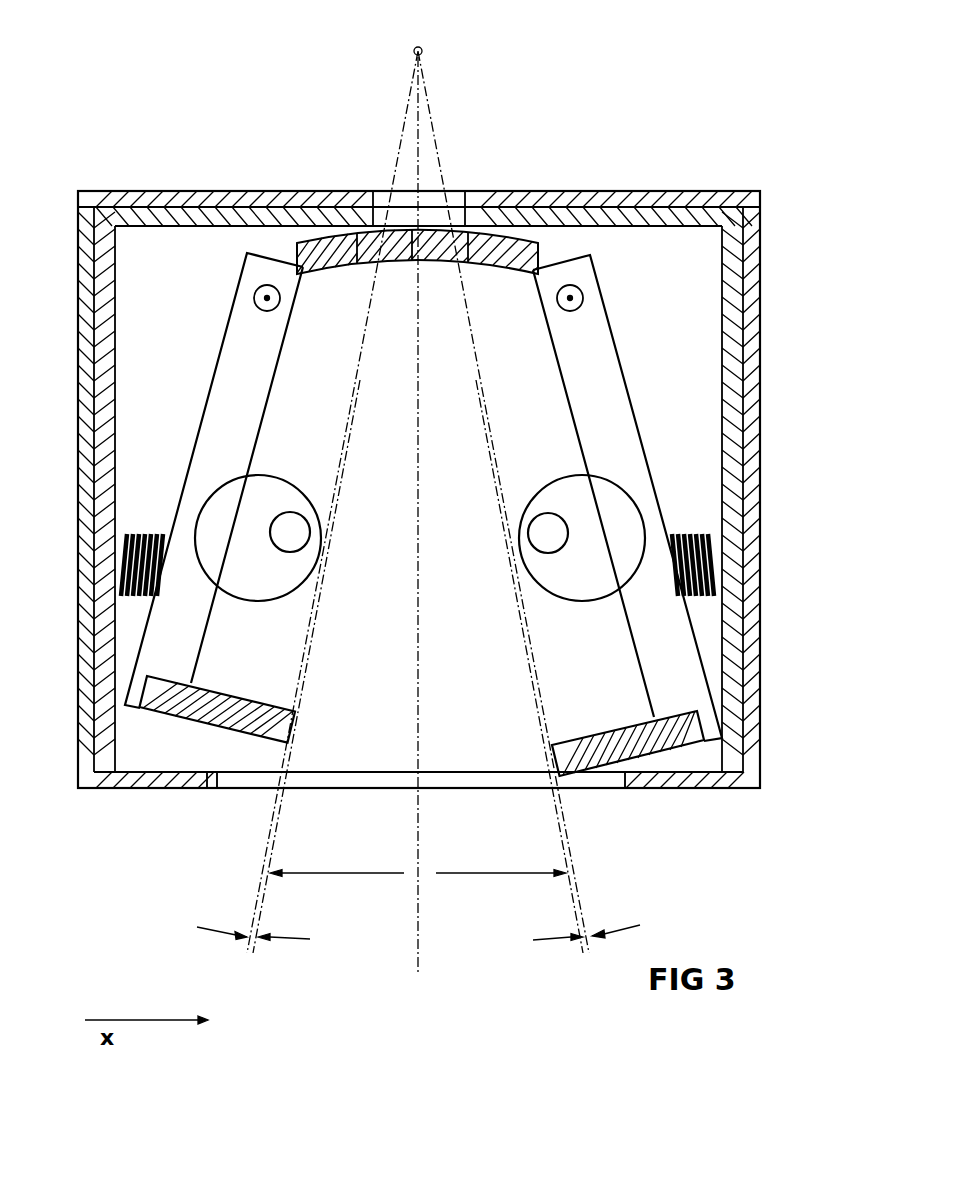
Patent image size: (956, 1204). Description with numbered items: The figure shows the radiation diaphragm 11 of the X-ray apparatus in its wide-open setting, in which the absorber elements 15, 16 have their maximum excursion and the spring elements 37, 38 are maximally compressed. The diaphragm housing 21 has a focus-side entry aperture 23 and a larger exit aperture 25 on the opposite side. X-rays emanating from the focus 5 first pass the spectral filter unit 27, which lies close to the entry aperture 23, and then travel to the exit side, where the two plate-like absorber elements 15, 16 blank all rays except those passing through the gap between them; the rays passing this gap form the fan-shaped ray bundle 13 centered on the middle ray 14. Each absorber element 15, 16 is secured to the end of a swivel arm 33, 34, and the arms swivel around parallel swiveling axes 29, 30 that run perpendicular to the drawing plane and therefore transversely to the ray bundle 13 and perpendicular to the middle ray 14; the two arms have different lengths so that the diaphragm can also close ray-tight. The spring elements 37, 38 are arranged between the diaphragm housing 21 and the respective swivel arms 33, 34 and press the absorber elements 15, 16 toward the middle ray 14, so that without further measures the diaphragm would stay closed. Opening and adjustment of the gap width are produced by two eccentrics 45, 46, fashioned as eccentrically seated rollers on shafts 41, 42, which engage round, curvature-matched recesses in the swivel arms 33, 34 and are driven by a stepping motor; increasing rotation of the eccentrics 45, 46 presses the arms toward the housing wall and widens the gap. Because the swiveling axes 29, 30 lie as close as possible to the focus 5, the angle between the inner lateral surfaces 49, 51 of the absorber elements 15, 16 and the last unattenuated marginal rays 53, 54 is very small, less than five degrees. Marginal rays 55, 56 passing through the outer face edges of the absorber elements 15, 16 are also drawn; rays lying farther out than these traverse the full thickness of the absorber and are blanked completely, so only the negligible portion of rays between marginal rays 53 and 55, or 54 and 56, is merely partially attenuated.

The focus 5 is at (422, 50).
The radiation diaphragm 11 is at (833, 441).
The ray bundle 13 is at (418, 874).
The middle ray 14 is at (418, 948).
The absorber element 15 is at (635, 743).
The absorber element 16 is at (187, 717).
The diaphragm housing 21 is at (752, 298).
The entry aperture 23 is at (430, 196).
The exit aperture 25 is at (247, 780).
The spectral filter unit 27 is at (440, 232).
The swiveling axis 29 is at (583, 298).
The swiveling axis 30 is at (256, 298).
The swivel arm 33 is at (597, 392).
The swivel arm 34 is at (235, 392).
The spring element 37 is at (692, 536).
The spring element 38 is at (146, 534).
The shaft 41 is at (543, 532).
The shaft 42 is at (289, 532).
The eccentric 45 is at (587, 582).
The eccentric 46 is at (251, 575).
The inner lateral surface 49 is at (545, 750).
The inner lateral surface 51 is at (290, 750).
The marginal ray 53 is at (577, 910).
The marginal ray 54 is at (260, 918).
The marginal ray 55 is at (590, 920).
The marginal ray 56 is at (257, 893).